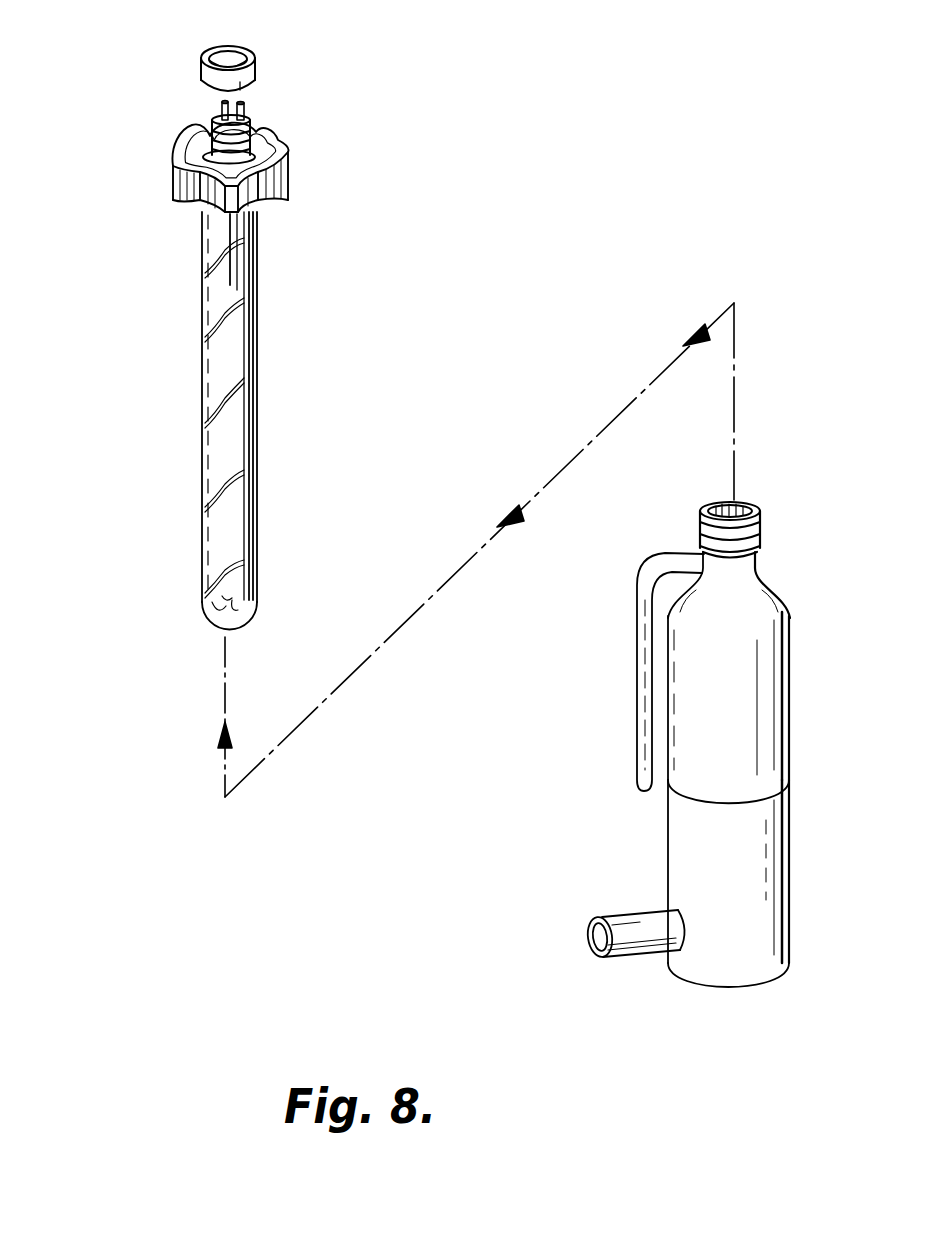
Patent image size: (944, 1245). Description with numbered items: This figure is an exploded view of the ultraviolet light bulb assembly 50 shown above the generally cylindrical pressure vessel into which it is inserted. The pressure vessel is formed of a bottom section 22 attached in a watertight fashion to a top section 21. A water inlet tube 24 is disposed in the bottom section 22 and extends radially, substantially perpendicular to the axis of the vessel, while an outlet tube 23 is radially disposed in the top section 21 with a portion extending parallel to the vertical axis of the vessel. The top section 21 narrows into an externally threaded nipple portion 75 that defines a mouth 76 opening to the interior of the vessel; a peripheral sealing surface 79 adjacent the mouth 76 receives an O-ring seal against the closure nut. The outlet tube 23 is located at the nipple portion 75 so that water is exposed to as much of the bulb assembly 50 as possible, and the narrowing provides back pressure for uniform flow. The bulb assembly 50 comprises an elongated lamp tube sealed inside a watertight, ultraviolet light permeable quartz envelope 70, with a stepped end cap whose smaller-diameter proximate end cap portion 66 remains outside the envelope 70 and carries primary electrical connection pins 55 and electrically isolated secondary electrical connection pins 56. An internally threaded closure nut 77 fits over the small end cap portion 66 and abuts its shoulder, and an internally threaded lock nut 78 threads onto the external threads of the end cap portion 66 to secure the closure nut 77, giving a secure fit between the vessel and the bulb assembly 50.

The ultraviolet light bulb assembly 50 is at (172, 382).
The internally threaded lock nut 78 is at (257, 52).
The primary electrical connection pins 55 is at (222, 103).
The secondary electrical connection pins 56 is at (244, 104).
The proximate end cap portion 66 is at (253, 121).
The internally threaded closure nut 77 is at (290, 157).
The ultraviolet light permeable envelope 70 is at (255, 555).
The mouth 76 is at (737, 503).
The peripheral sealing surface 79 is at (762, 518).
The externally threaded nipple portion 75 is at (762, 547).
The top section 21 is at (806, 783).
The bottom section 22 is at (806, 965).
The outlet tube 23 is at (636, 673).
The water inlet tube 24 is at (637, 918).